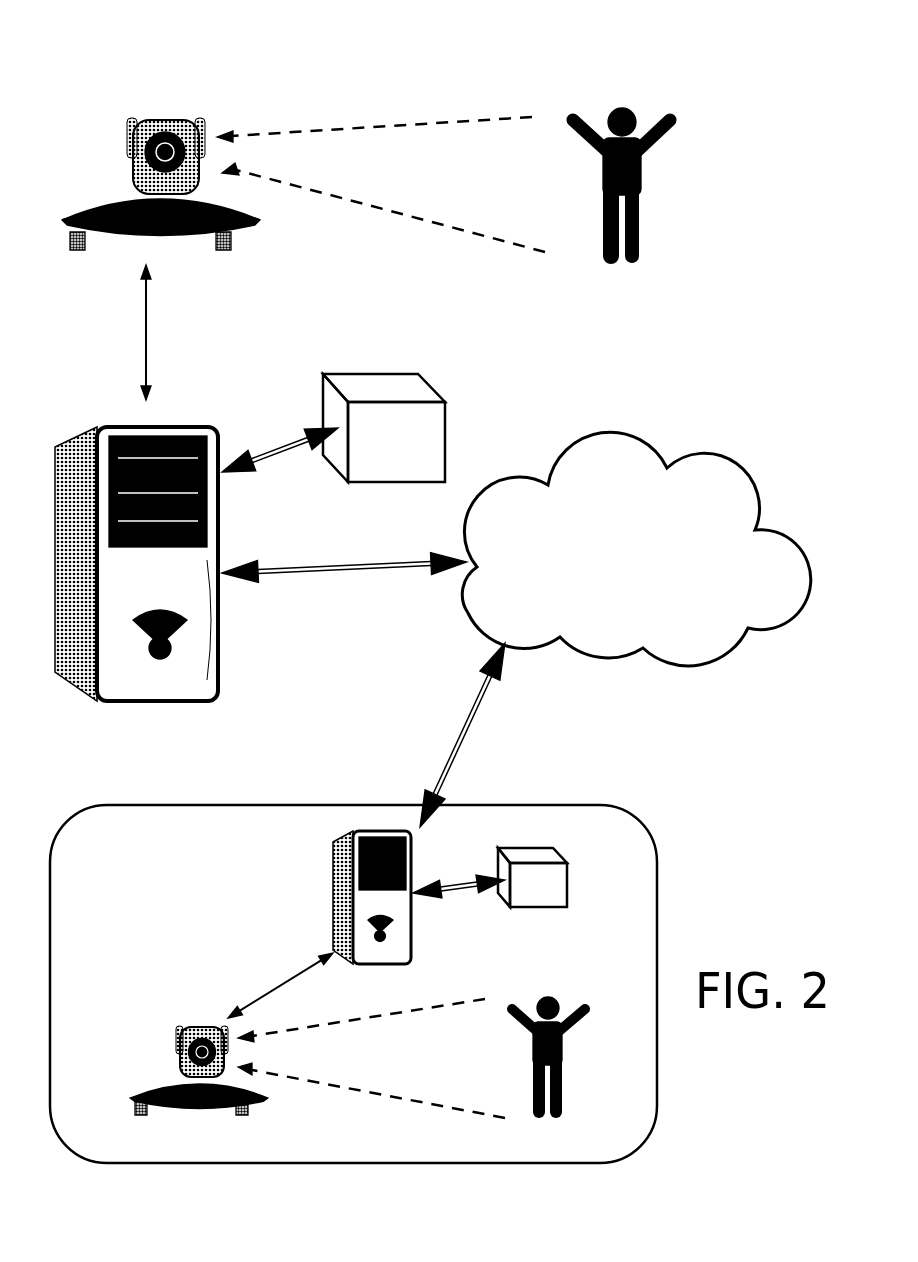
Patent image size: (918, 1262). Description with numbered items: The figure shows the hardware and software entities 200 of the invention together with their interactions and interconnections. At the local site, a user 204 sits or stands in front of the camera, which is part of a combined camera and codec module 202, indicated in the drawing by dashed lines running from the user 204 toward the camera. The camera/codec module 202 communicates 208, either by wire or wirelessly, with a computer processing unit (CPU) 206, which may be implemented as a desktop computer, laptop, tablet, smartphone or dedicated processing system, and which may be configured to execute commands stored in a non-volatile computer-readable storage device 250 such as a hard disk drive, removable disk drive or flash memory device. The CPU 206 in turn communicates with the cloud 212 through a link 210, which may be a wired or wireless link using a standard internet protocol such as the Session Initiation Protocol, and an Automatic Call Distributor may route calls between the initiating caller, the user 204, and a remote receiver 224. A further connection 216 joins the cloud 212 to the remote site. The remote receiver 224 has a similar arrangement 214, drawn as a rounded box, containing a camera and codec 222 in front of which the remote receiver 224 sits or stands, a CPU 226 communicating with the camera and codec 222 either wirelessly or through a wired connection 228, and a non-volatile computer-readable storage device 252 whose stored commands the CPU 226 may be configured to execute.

The hardware and software entities 200 is at (420, 72).
The combined camera and codec module 202 is at (160, 122).
The user 204 is at (623, 105).
The computer processing unit (CPU) 206 is at (173, 432).
The communication between camera/codec module and CPU 208 is at (147, 328).
The link 210 is at (308, 578).
The cloud 212 is at (645, 442).
The arrangement of camera and codec and CPU 214 is at (250, 803).
The network connection to remote site 216 is at (483, 703).
The camera and codec 222 is at (187, 1028).
The remote receiver 224 is at (547, 997).
The CPU 226 is at (333, 897).
The wired connection 228 is at (293, 977).
The non-volatile computer-readable storage device 250 is at (377, 375).
The non-volatile computer-readable storage device 252 is at (550, 897).